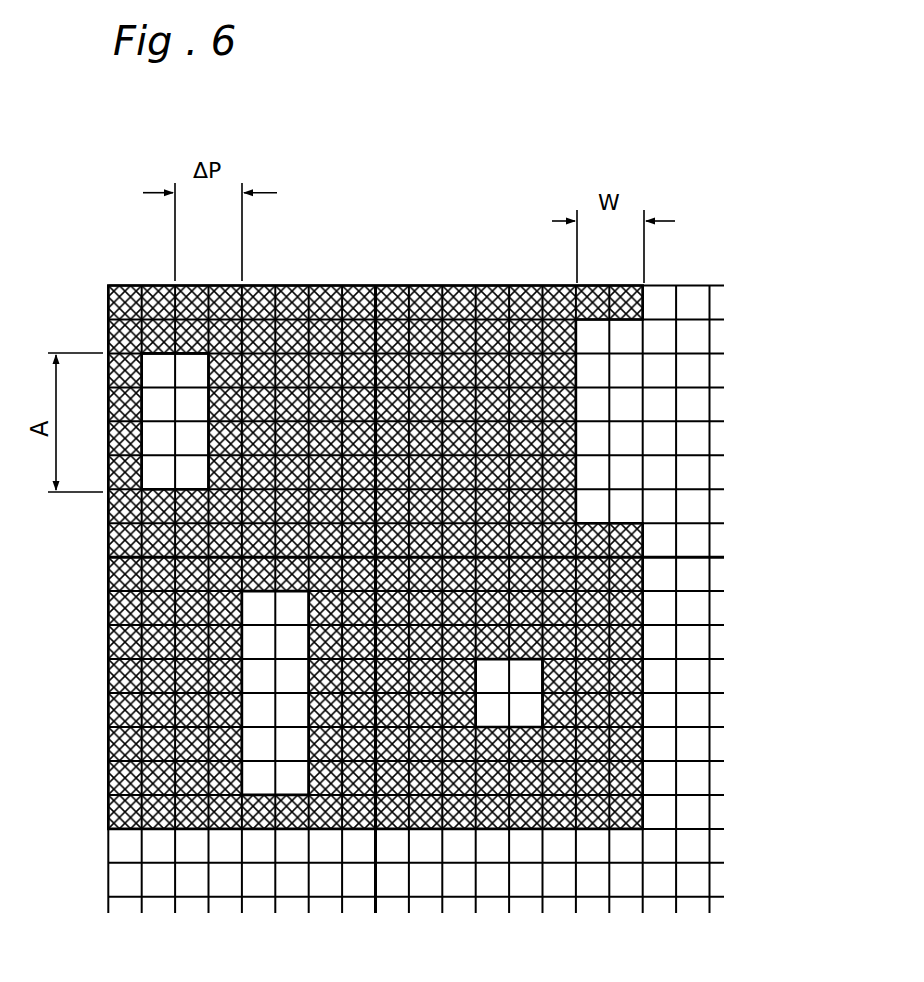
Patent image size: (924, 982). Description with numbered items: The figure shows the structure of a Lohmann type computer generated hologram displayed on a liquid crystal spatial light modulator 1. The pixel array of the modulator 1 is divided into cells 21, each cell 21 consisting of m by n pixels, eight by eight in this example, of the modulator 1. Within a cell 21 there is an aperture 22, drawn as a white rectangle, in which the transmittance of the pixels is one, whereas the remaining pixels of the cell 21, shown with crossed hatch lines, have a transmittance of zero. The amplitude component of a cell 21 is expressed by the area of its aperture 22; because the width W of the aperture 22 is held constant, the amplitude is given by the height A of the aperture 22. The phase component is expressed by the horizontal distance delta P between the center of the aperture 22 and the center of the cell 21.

The liquid crystal spatial light modulator 1 is at (503, 188).
The cell 21 is at (408, 272).
The aperture 22 is at (160, 375).